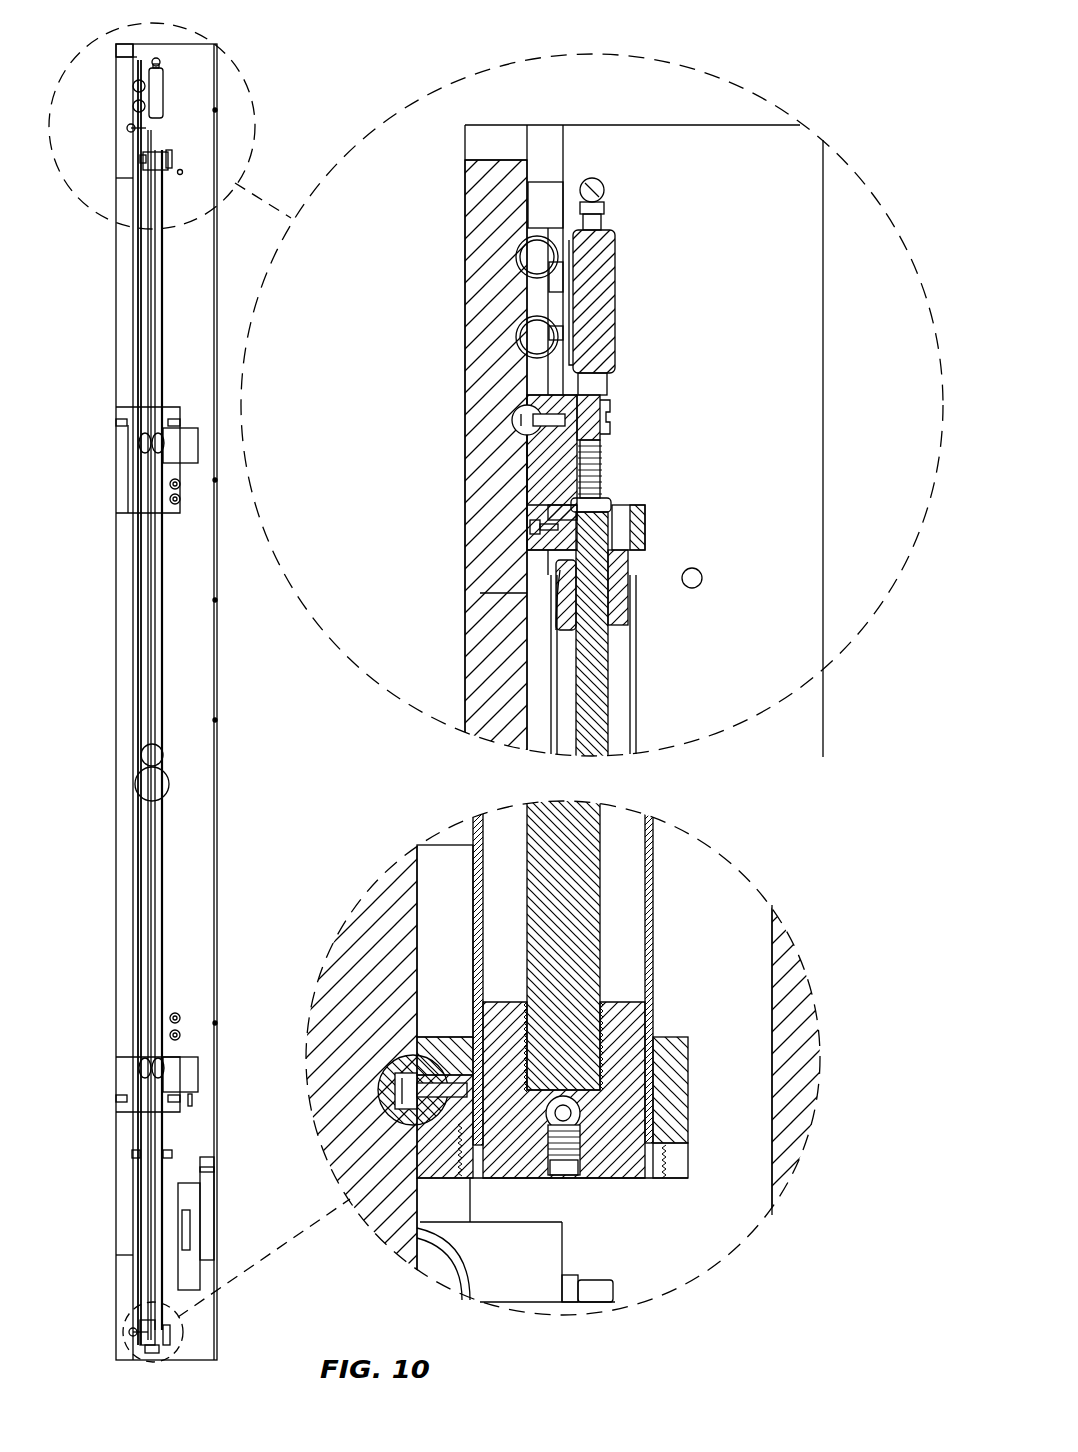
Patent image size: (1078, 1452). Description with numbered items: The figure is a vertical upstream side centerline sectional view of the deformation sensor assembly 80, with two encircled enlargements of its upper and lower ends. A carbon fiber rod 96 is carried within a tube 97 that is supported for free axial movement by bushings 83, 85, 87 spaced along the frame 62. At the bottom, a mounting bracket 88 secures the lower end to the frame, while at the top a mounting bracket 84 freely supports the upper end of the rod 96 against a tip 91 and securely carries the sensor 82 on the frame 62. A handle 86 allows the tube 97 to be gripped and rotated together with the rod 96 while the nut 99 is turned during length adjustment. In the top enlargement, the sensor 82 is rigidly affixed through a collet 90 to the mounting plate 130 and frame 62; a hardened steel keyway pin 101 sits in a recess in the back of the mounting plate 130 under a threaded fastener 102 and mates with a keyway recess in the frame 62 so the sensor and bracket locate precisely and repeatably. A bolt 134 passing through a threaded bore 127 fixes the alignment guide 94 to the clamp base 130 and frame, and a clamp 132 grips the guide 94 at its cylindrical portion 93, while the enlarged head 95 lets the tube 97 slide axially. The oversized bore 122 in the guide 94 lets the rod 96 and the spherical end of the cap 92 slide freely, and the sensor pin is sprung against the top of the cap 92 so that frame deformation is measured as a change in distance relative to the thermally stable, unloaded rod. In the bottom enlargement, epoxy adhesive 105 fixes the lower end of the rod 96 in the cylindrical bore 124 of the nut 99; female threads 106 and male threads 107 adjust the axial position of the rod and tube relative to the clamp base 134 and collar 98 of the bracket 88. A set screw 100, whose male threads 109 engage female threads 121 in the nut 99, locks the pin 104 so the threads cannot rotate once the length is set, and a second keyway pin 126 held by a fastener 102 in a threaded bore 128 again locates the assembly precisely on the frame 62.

The frame 62 is at (190, 48).
The deformation sensor assembly 80 is at (112, 672).
The sensor 82 is at (178, 92).
The bushing 83 is at (142, 448).
The mounting bracket 84 is at (186, 158).
The bushing 85 is at (142, 776).
The handle 86 is at (185, 1140).
The bushing 87 is at (142, 1068).
The mounting bracket 88 is at (182, 1334).
The collet 90 is at (612, 420).
The tip 91 is at (602, 462).
The end cap 92 is at (610, 505).
The cylindrical portion 93 is at (648, 520).
The alignment guide 94 is at (636, 574).
The enlarged head 95 is at (630, 600).
The carbon fiber rod 96 is at (152, 583).
The tube 97 is at (165, 637).
The collar 98 is at (675, 1066).
The nut 99 is at (642, 1182).
The set screw 100 is at (565, 1180).
The keyway pin 101 is at (533, 447).
The threaded fastener 102 is at (522, 420).
The pin 104 is at (563, 1096).
The epoxy adhesive 105 is at (646, 1013).
The female threads 106 is at (665, 1165).
The male threads 107 is at (465, 1150).
The male threads 109 is at (533, 1178).
The female threads 121 is at (587, 1165).
The oversized bore 122 is at (575, 620).
The cylindrical bore 124 is at (540, 1005).
The keyway pin 126 is at (380, 1077).
The threaded bore 127 is at (560, 558).
The threaded bore 128 is at (440, 1133).
The mounting plate 130 is at (540, 488).
The clamp 132 is at (645, 535).
The bolt 134 is at (533, 531).